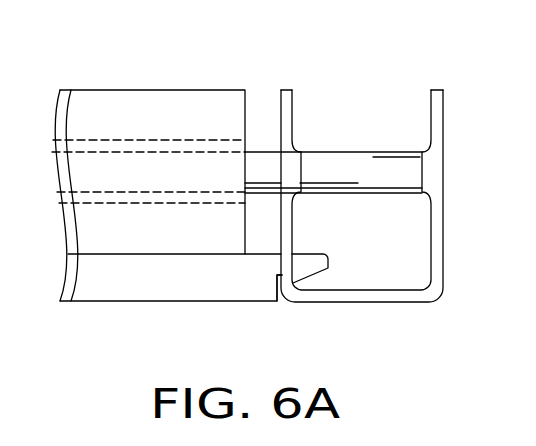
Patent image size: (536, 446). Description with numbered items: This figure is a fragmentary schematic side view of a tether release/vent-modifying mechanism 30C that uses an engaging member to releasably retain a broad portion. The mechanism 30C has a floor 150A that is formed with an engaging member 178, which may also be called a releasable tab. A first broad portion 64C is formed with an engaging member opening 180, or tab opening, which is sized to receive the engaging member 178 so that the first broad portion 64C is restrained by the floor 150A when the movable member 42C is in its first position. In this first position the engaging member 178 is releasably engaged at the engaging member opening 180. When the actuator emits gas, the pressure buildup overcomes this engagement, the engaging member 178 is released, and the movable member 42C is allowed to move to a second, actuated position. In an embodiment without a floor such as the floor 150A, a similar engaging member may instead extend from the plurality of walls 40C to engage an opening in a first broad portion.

The tether release/vent-modifying mechanism 30C is at (142, 70).
The plurality of walls 40C is at (173, 102).
The movable member 42C is at (259, 165).
The first broad portion 64C is at (295, 115).
The floor 150A is at (173, 287).
The engaging member 178 is at (315, 268).
The engaging member opening 180 is at (287, 258).